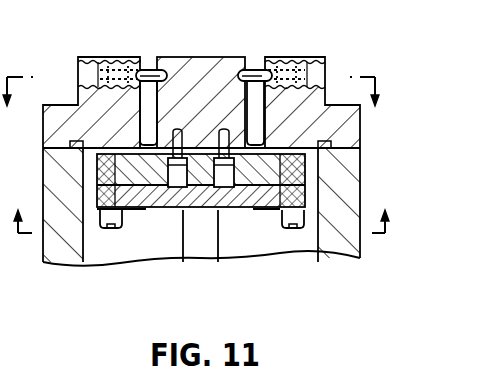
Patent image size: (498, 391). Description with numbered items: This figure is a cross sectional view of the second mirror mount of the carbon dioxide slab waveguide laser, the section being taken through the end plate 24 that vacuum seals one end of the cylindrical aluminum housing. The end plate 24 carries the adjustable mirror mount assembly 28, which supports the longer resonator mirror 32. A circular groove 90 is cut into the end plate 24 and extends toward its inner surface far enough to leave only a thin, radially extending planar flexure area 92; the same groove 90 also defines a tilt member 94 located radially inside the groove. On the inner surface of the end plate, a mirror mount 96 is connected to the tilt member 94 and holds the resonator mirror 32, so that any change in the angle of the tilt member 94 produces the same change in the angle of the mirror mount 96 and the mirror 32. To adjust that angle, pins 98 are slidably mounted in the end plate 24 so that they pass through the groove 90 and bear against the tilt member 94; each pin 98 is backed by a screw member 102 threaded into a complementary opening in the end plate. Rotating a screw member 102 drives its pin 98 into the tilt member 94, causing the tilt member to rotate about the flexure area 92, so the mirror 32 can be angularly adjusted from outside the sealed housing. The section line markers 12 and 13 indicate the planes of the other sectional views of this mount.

The section line 12- 12 is at (203, 207).
The section line 13- 13 is at (194, 108).
The end plate 24 is at (88, 142).
The mirror mount assembly 28 is at (240, 46).
The resonator mirror 32 is at (158, 210).
The circular groove 90 is at (152, 90).
The flexure area 92 is at (253, 212).
The tilt member 94 is at (182, 55).
The mirror mount 96 is at (83, 193).
The pin 98 is at (258, 62).
The screw member 102 is at (115, 57).